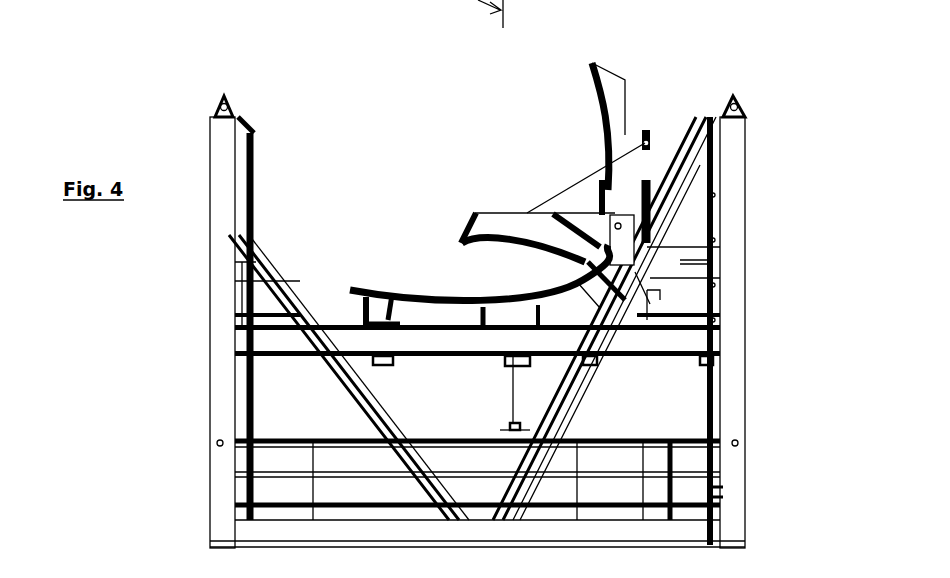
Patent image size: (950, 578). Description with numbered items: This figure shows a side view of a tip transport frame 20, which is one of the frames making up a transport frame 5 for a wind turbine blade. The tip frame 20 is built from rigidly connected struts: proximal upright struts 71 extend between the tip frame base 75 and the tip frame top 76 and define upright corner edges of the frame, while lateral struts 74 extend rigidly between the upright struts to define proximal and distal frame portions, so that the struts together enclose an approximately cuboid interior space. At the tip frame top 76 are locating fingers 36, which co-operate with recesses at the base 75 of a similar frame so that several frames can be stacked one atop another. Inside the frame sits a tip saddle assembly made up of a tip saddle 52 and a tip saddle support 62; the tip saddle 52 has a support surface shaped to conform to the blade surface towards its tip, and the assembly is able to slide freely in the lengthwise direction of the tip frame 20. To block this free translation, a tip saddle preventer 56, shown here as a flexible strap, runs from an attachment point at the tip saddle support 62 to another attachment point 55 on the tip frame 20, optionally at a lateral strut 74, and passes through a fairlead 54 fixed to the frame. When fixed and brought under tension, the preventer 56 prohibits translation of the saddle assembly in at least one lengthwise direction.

The tip frame 20 is at (85, 107).
The locating finger 36 is at (222, 93).
The transport frame 5 is at (437, 174).
The tip saddle 52 is at (434, 292).
The tip frame top 76 is at (799, 116).
The lateral strut 74 is at (245, 338).
The proximal upright strut 71 is at (220, 385).
The attachment point 55 is at (530, 430).
The tip frame base 75 is at (176, 542).
The fairlead 54 is at (517, 358).
The tip saddle support 62 is at (609, 388).
The tip saddle preventer 56 is at (513, 400).